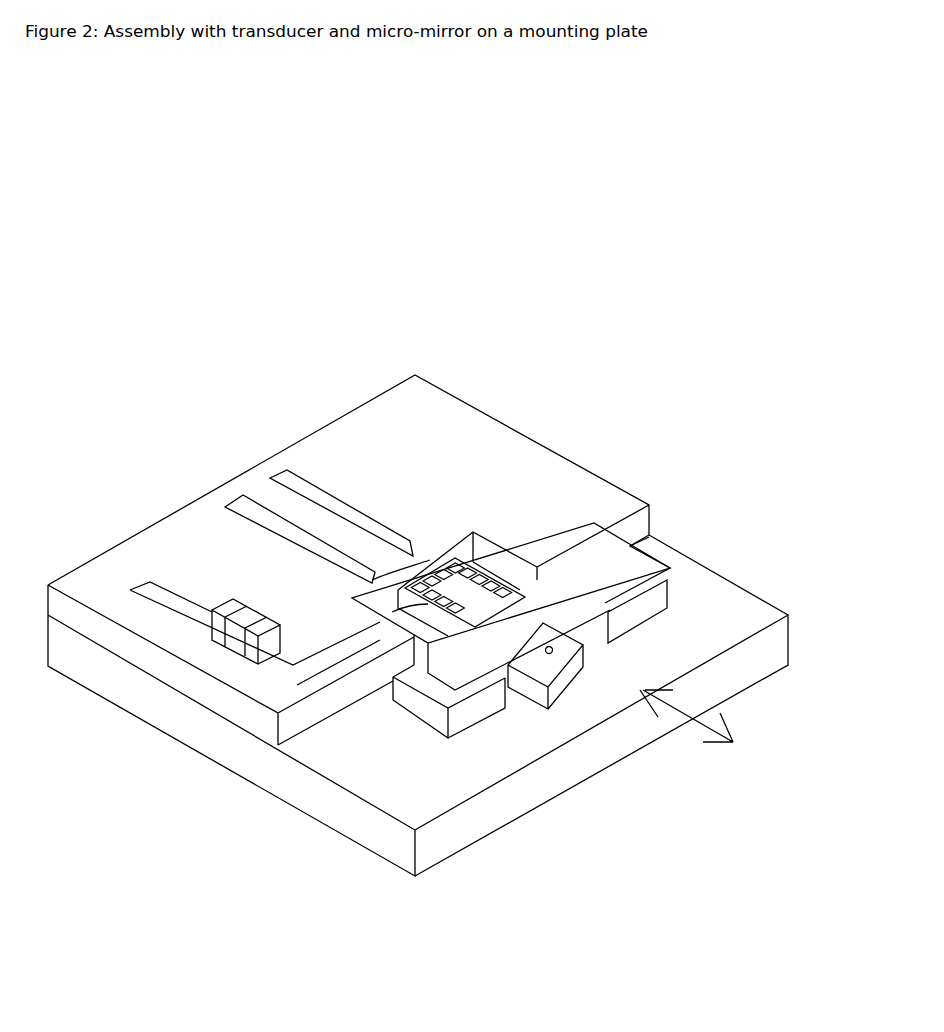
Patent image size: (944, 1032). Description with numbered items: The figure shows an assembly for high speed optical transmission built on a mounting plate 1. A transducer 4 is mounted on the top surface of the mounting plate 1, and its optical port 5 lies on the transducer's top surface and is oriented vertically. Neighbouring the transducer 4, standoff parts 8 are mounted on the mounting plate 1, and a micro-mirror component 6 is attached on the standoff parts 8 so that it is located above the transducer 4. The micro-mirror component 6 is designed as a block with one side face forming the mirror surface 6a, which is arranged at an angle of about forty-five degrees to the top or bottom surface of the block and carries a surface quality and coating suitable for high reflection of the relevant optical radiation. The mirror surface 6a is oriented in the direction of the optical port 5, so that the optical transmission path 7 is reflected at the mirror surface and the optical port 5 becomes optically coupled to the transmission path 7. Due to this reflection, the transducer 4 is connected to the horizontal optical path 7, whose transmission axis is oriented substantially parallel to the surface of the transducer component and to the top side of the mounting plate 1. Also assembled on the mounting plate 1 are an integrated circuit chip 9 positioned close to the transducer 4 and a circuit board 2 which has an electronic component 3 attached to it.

The mounting plate 1 is at (398, 768).
The circuit board 2 is at (311, 490).
The electronic component 3 is at (238, 604).
The transducer 4 is at (563, 672).
The optical port 5 is at (549, 654).
The micro-mirror component 6 is at (596, 562).
The mirror surface 6a is at (670, 608).
The optical transmission path 7 is at (696, 716).
The standoff parts 8 is at (408, 702).
The integrated circuit chip 9 is at (466, 598).